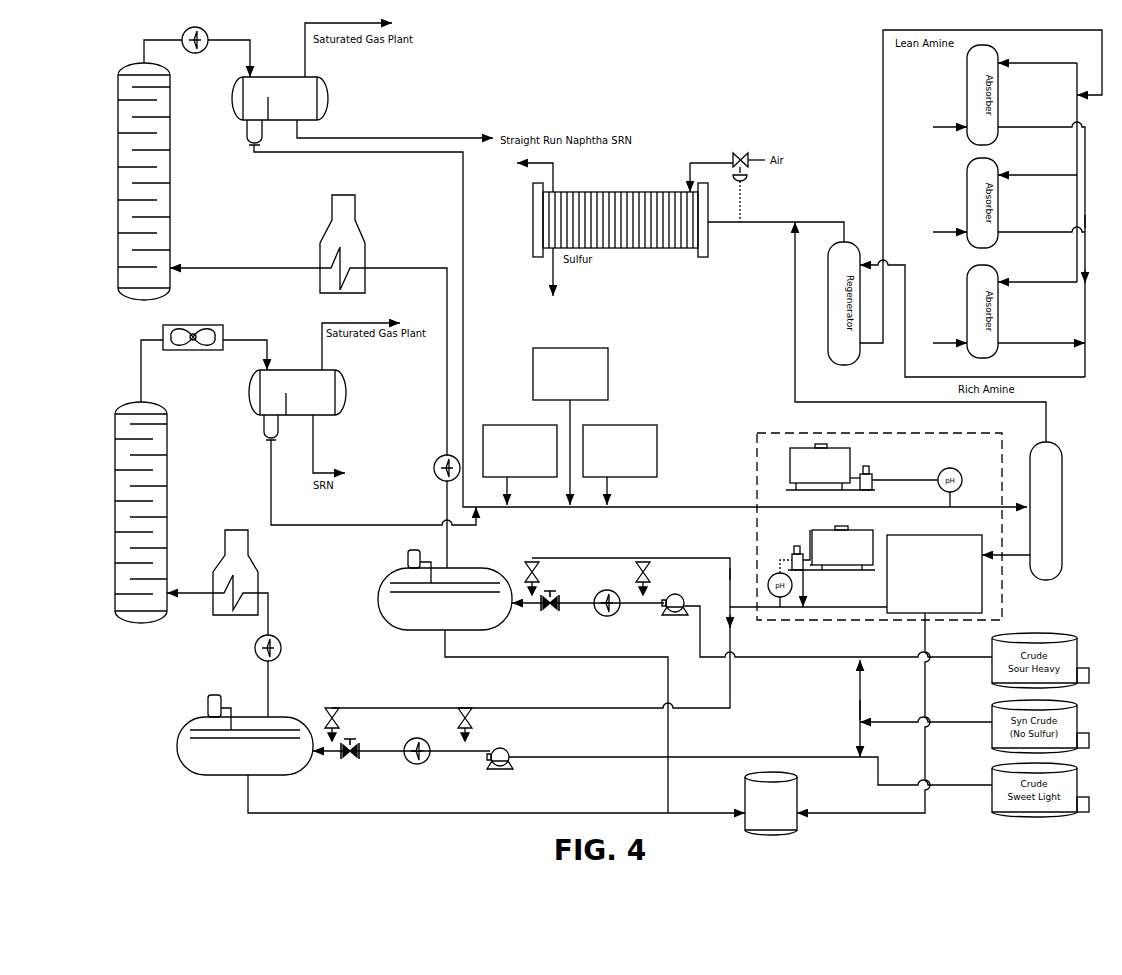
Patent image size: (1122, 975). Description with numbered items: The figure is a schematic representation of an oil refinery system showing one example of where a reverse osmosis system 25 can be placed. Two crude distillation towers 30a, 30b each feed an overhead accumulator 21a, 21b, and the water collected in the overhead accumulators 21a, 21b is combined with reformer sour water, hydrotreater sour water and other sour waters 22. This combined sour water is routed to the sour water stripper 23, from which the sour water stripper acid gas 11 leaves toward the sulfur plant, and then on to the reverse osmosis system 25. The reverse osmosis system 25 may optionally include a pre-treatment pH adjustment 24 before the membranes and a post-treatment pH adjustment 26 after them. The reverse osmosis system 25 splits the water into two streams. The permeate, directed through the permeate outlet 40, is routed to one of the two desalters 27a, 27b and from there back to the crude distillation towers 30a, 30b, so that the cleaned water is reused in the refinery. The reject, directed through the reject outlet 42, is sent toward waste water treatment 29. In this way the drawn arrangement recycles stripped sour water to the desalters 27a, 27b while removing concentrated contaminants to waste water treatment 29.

The sour water stripper acid gas 11 is at (1048, 405).
The overhead accumulator 21a is at (329, 96).
The overhead accumulator 21b is at (346, 391).
The other sour waters 22 is at (555, 348).
The sour water stripper 23 is at (1063, 497).
The pre-treatment pH adjustment 24 is at (859, 496).
The reverse osmosis system 25 is at (898, 526).
The post-treatment pH adjustment 26 is at (804, 591).
The desalter 27a is at (378, 598).
The desalter 27b is at (177, 745).
The waste water treatment 29 is at (775, 832).
The crude distillation tower 30a is at (118, 153).
The crude distillation tower 30b is at (115, 469).
The permeate outlet 40 is at (742, 607).
The reject outlet 42 is at (924, 692).